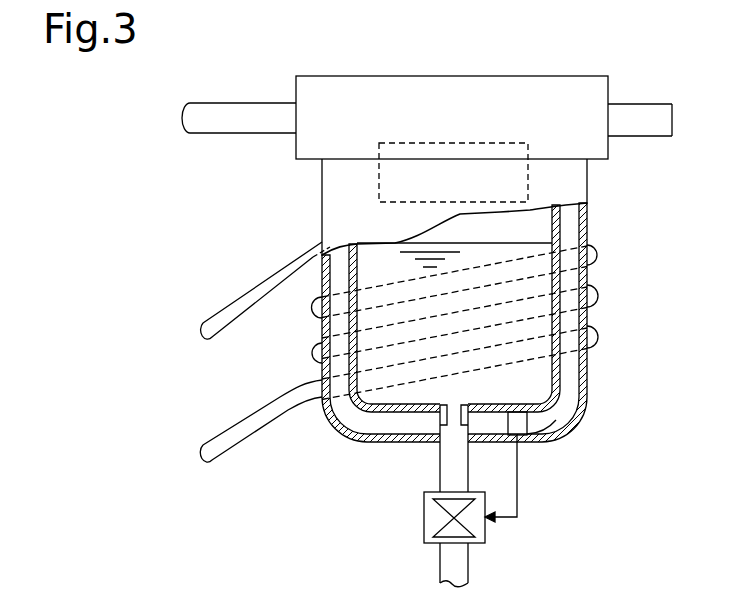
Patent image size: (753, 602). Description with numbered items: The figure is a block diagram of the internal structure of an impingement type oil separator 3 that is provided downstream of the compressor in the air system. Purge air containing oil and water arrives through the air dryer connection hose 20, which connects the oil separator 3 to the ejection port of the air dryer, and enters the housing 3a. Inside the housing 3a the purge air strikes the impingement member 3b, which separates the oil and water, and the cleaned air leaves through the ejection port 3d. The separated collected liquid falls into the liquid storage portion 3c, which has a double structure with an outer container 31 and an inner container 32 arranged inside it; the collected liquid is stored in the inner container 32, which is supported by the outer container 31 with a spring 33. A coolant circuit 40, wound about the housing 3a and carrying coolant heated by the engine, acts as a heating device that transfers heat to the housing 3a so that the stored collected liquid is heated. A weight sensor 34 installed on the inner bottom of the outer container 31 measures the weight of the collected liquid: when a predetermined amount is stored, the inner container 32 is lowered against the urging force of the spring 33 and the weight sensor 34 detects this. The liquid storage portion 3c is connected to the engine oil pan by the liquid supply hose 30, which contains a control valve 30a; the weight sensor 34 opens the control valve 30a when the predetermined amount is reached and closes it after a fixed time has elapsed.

The oil separator 3 is at (481, 76).
The housing 3a is at (322, 197).
The impingement member 3b is at (446, 143).
The liquid storage portion 3c is at (589, 378).
The ejection port 3d is at (641, 104).
The air dryer connection hose 20 is at (228, 103).
The liquid supply hose 30 is at (438, 468).
The control valve 30a is at (424, 517).
The outer container 31 is at (590, 207).
The inner container 32 is at (562, 232).
The spring 33 is at (565, 437).
The weight sensor 34 is at (521, 440).
The coolant circuit 40 is at (247, 288).